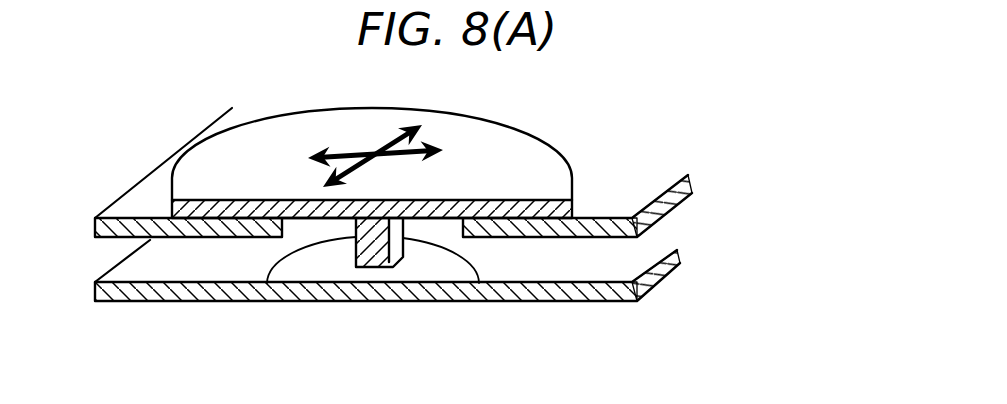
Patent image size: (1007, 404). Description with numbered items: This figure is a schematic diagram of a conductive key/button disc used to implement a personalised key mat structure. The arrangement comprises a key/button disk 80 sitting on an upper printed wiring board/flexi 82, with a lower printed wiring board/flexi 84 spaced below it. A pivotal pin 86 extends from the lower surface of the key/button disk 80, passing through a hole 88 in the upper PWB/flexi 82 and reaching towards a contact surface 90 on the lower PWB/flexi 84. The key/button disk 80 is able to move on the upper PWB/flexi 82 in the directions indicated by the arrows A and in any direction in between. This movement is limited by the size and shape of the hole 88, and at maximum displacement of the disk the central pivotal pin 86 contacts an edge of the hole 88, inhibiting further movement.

The key/button disk 80 is at (500, 162).
The upper printed wiring board/flexi 82 is at (689, 184).
The lower printed wiring board/flexi 84 is at (679, 258).
The pivotal pin 86 is at (372, 268).
The hole 88 is at (308, 233).
The contact surface 90 is at (458, 272).